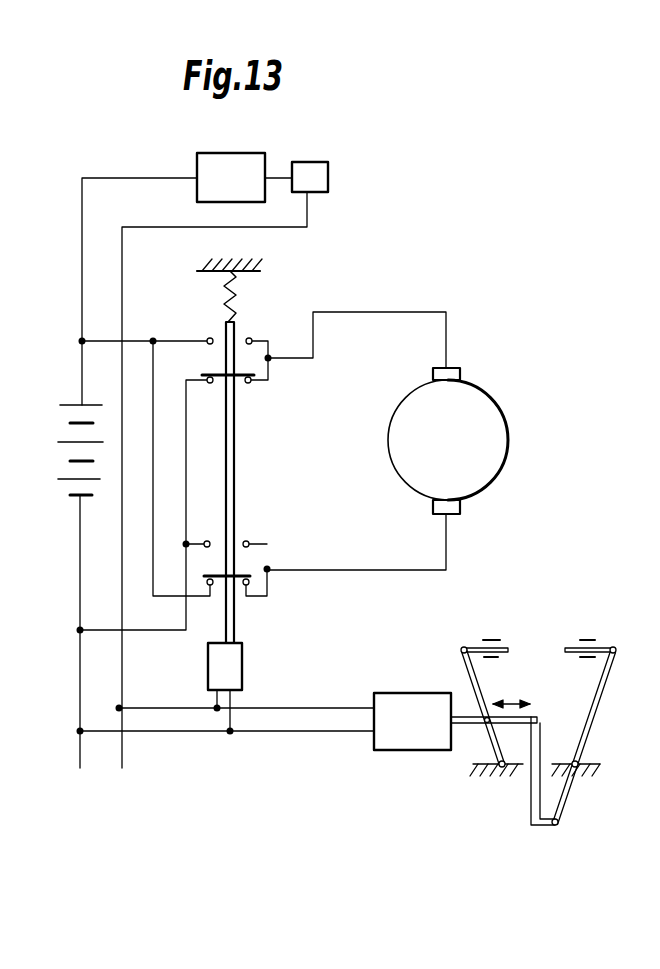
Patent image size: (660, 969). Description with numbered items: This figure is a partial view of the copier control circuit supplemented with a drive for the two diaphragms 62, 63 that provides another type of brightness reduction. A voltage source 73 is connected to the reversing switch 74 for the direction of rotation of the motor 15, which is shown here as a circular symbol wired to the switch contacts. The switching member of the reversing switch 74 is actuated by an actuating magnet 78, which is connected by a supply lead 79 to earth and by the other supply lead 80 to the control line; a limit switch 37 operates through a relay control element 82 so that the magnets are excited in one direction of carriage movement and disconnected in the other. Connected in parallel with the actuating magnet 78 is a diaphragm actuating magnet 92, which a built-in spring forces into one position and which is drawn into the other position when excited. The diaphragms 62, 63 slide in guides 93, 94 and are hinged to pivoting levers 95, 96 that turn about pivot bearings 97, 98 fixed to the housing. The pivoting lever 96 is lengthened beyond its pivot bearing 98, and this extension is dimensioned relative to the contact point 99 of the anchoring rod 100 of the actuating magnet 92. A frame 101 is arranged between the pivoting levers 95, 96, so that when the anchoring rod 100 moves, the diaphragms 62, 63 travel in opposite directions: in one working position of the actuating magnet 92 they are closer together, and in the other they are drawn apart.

The electric motor 15 is at (415, 462).
The limit switch 37 is at (322, 179).
The diaphragm 62 is at (467, 647).
The diaphragm 63 is at (567, 647).
The voltage source 73 is at (60, 453).
The reversing switch 74 is at (243, 465).
The actuating magnet 78 is at (230, 665).
The supply lead 79 is at (193, 731).
The supply lead 80 is at (157, 708).
The relay control element 82 is at (200, 166).
The diaphragm actuating magnet 92 is at (393, 740).
The guide 93 is at (492, 640).
The guide 94 is at (588, 640).
The pivoting lever 95 is at (470, 665).
The pivoting lever 96 is at (595, 700).
The pivot bearing 97 is at (502, 768).
The pivot bearing 98 is at (575, 768).
The contact point 99 is at (485, 722).
The anchoring rod 100 is at (467, 717).
The frame 101 is at (540, 743).